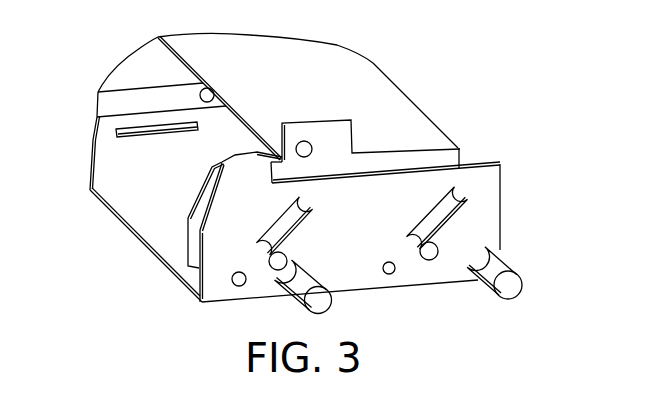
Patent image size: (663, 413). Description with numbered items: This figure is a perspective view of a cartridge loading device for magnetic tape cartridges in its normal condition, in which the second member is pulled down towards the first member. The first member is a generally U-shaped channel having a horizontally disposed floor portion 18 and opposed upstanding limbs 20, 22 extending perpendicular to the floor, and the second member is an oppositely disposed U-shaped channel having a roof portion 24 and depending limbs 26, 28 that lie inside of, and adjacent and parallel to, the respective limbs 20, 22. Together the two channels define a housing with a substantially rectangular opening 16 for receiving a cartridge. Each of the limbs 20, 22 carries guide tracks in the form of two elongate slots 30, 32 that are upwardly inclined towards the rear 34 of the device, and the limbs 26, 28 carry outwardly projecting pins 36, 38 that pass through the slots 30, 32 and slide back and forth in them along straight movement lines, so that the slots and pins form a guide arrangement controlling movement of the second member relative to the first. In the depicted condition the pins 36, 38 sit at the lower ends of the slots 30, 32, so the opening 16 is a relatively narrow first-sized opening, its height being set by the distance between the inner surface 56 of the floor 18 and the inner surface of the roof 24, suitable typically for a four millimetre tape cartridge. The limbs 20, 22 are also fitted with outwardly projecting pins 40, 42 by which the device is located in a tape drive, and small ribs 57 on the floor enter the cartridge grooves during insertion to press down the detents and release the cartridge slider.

The opening 16 is at (138, 148).
The floor portion 18 is at (169, 274).
The upstanding limb 20 is at (500, 173).
The upstanding limb 22 is at (98, 107).
The roof portion 24 is at (408, 101).
The depending limb 26 is at (459, 157).
The depending limb 28 is at (133, 59).
The elongate slot 30 is at (287, 223).
The elongate slot 32 is at (428, 215).
The rear 34 is at (386, 63).
The pin 36 is at (277, 270).
The pin 38 is at (430, 258).
The pin 40 is at (324, 303).
The pin 42 is at (514, 292).
The inner surface of the floor 56 is at (124, 210).
The rib 57 is at (153, 136).